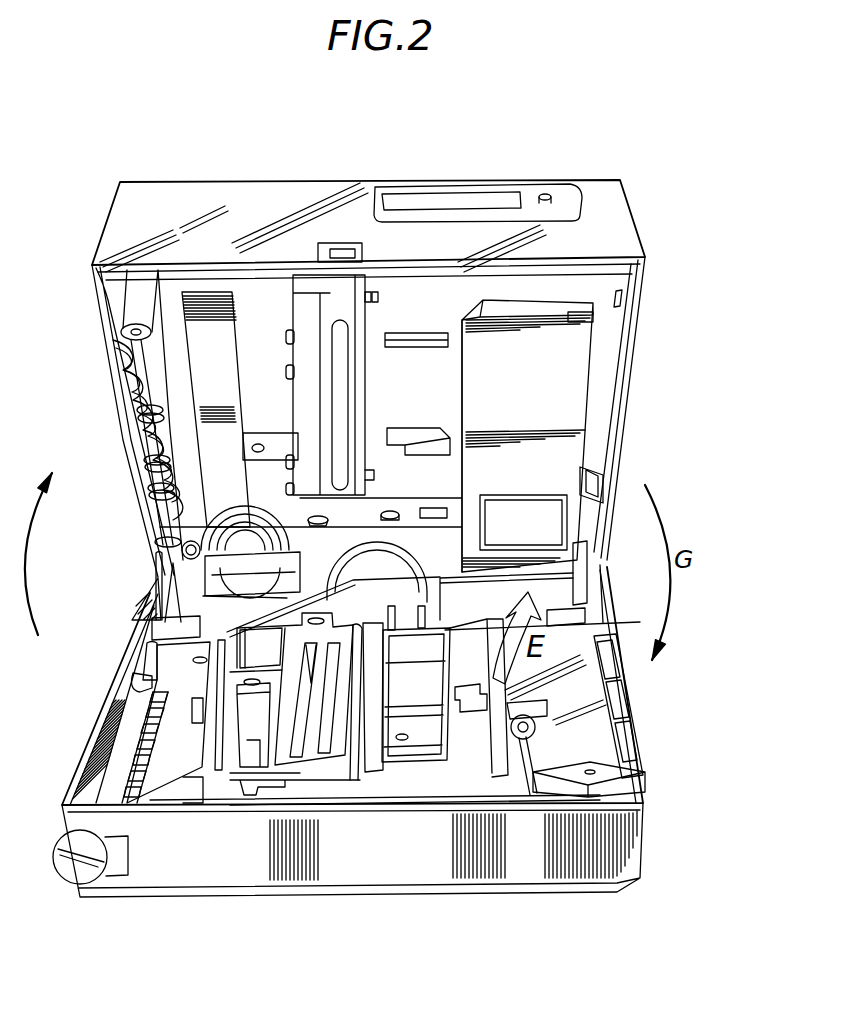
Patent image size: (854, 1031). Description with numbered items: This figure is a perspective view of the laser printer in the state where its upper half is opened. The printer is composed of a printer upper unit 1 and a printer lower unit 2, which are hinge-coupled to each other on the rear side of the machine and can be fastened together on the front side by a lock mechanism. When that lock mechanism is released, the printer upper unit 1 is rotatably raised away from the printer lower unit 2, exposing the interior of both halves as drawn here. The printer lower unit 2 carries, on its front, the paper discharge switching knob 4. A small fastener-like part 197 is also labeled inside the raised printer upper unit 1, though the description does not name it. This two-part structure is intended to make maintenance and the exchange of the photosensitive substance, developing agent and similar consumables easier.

The printer upper unit 1 is at (650, 312).
The printer lower unit 2 is at (638, 701).
The paper discharge switching knob 4 is at (73, 867).
The screw 197 is at (313, 517).